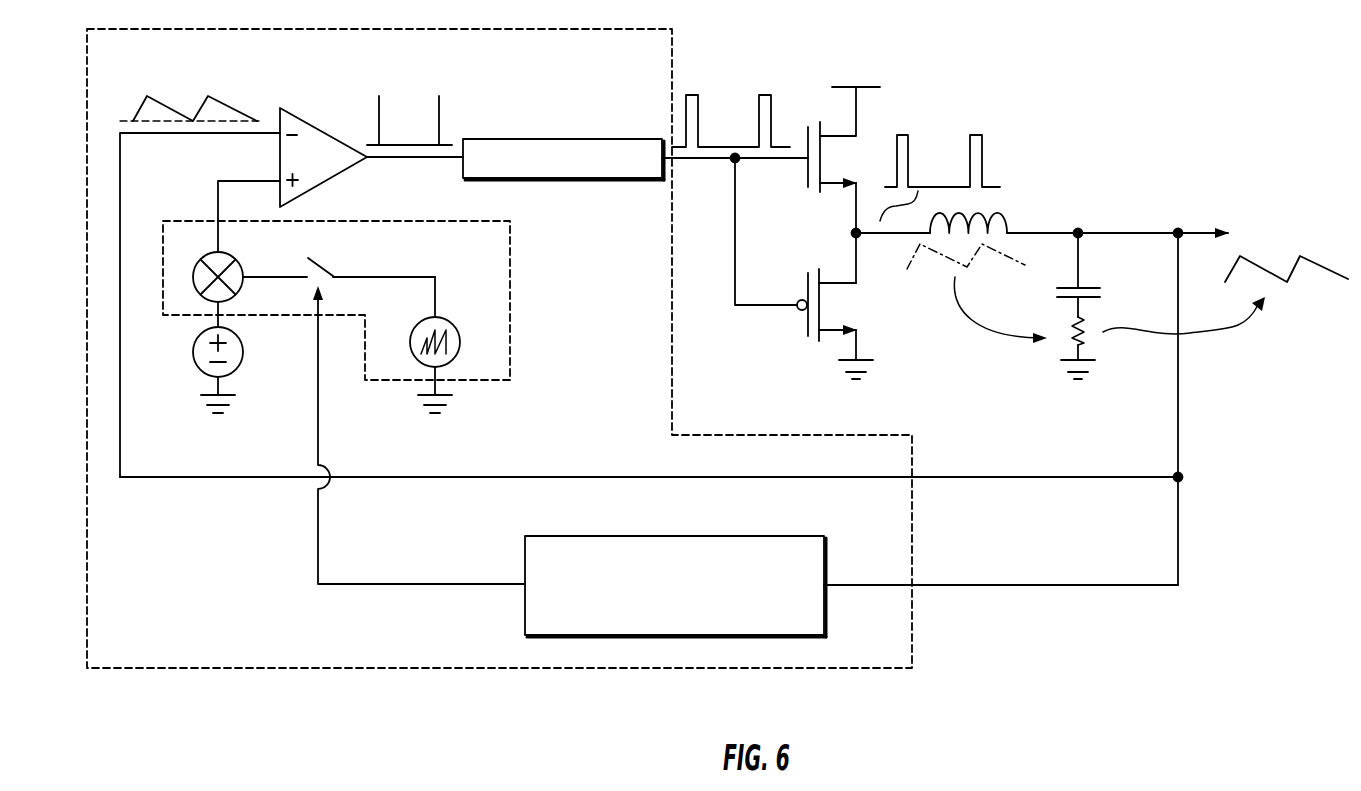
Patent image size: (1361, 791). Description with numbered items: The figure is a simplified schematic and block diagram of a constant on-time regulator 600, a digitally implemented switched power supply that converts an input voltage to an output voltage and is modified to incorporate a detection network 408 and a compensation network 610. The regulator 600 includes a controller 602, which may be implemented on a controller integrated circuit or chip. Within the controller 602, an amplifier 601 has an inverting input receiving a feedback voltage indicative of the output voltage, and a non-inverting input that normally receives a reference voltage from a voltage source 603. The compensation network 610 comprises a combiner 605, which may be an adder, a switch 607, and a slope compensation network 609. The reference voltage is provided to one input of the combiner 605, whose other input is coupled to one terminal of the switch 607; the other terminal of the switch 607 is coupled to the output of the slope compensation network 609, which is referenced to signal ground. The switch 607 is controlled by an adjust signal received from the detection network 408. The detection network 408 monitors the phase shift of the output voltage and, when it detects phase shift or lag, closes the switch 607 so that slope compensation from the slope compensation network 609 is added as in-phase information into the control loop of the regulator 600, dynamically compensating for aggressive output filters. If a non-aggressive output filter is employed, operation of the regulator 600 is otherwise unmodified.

The constant on-time regulator 600 is at (1122, 117).
The amplifier 601 is at (323, 152).
The controller 602 is at (155, 648).
The voltage source 603 is at (215, 339).
The combiner 605 is at (234, 266).
The switch 607 is at (339, 257).
The slope compensation network 609 is at (451, 322).
The compensation network 610 is at (492, 252).
The detection network 408 is at (688, 613).